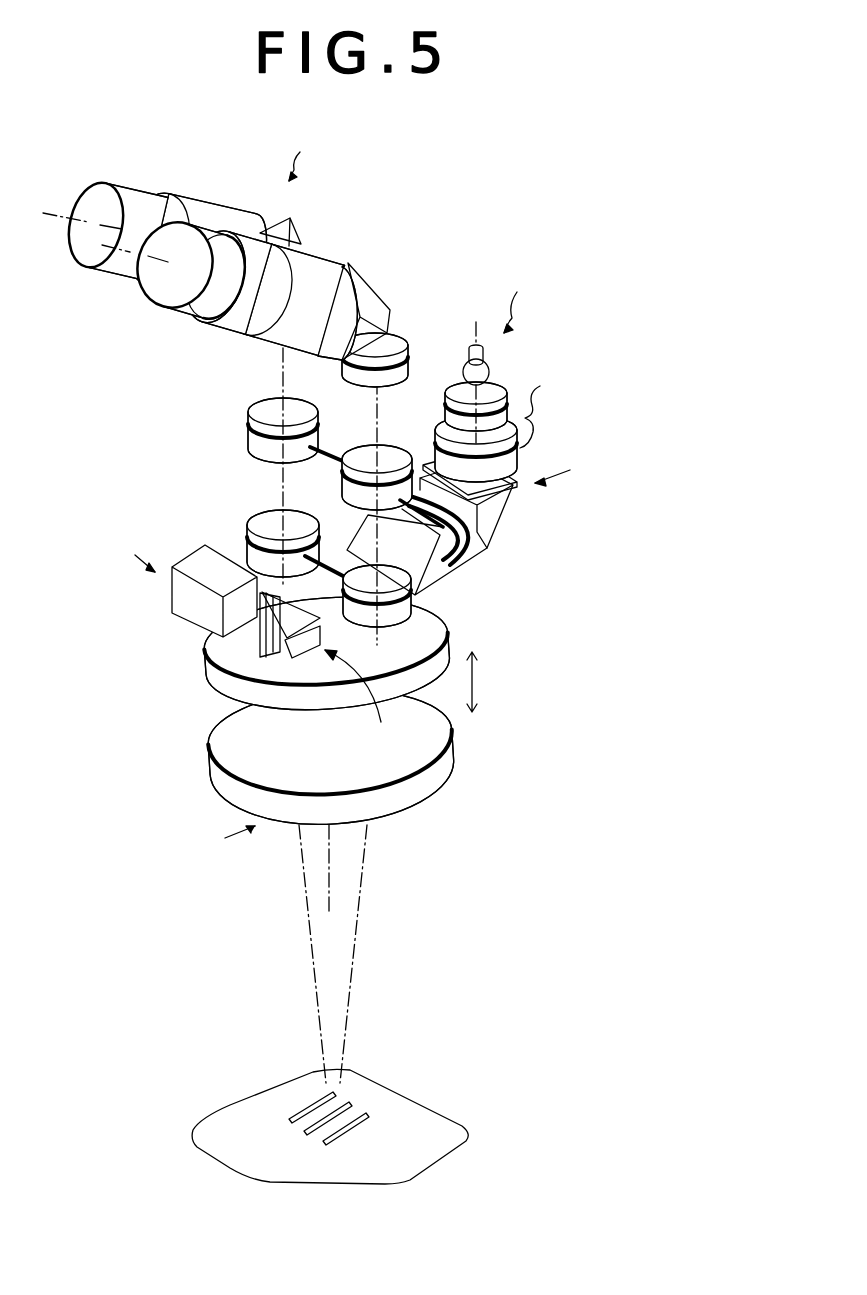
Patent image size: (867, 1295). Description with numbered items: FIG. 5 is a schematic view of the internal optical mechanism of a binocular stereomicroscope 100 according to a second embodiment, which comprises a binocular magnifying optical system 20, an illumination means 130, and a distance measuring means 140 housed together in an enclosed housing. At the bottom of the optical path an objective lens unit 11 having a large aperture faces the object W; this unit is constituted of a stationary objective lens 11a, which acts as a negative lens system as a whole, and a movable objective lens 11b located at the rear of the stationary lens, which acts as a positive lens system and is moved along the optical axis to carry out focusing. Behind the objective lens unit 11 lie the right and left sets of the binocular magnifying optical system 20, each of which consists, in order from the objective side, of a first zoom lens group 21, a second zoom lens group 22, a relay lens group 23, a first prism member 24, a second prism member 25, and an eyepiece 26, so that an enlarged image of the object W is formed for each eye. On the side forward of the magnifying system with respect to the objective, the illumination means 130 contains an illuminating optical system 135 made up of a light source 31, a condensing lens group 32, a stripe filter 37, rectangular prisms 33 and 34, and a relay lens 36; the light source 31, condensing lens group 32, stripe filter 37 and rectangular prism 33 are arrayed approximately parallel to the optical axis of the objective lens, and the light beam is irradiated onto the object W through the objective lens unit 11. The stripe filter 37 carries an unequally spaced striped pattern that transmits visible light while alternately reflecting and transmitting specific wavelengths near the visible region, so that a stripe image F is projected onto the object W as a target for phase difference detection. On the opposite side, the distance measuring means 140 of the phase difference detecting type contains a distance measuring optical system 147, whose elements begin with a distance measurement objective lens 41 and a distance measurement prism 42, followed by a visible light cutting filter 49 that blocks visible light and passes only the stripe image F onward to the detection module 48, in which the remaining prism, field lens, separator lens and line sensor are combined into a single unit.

The binocular stereomicroscope 100 is at (465, 166).
The binocular magnifying optical system 20 is at (307, 150).
The eyepiece 26 is at (133, 200).
The second prism member 25 is at (222, 200).
The first prism member 24 is at (278, 215).
The relay lens group 23 is at (400, 348).
The second zoom lens group 22 is at (260, 408).
The first zoom lens group 21 is at (262, 523).
The illumination means 130 is at (532, 304).
The light source 31 is at (490, 368).
The condensing lens group 32 is at (556, 400).
The stripe filter 37 is at (500, 465).
The illuminating optical system 135 is at (575, 465).
The rectangular prism 33 is at (478, 522).
The relay lens 36 is at (478, 540).
The rectangular prism 34 is at (440, 572).
The distance measuring means 140 is at (121, 551).
The visible light cutting filter 49 is at (270, 602).
The detection module 48 is at (183, 607).
The distance measurement prism 42 is at (262, 625).
The distance measurement objective lens 41 is at (293, 640).
The distance measuring optical system 147 is at (401, 697).
The objective lens unit 11 is at (223, 838).
The stationary objective lens 11a is at (445, 768).
The movable objective lens 11b is at (448, 630).
The object W is at (430, 1118).
The stripe image F is at (353, 1120).